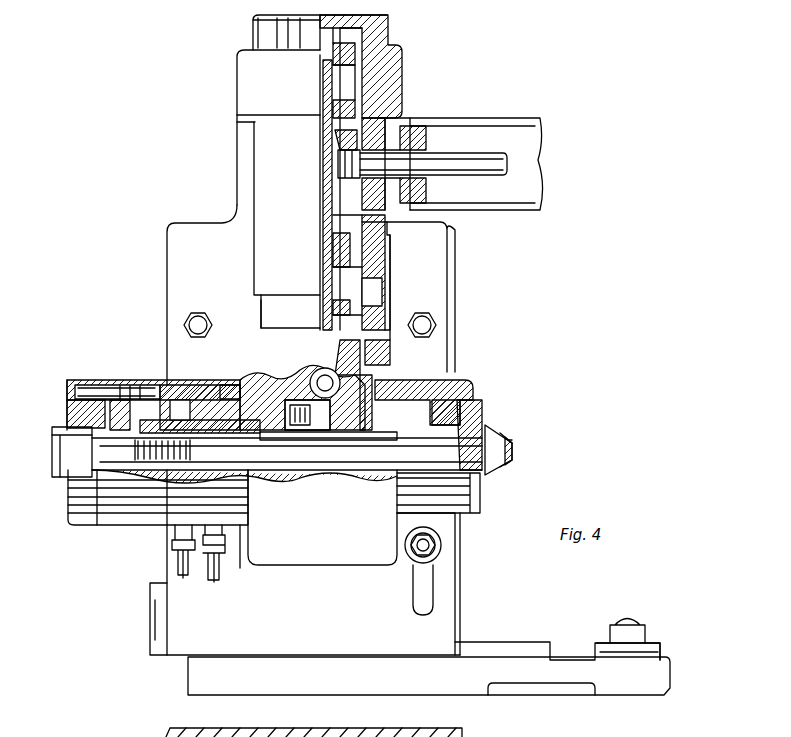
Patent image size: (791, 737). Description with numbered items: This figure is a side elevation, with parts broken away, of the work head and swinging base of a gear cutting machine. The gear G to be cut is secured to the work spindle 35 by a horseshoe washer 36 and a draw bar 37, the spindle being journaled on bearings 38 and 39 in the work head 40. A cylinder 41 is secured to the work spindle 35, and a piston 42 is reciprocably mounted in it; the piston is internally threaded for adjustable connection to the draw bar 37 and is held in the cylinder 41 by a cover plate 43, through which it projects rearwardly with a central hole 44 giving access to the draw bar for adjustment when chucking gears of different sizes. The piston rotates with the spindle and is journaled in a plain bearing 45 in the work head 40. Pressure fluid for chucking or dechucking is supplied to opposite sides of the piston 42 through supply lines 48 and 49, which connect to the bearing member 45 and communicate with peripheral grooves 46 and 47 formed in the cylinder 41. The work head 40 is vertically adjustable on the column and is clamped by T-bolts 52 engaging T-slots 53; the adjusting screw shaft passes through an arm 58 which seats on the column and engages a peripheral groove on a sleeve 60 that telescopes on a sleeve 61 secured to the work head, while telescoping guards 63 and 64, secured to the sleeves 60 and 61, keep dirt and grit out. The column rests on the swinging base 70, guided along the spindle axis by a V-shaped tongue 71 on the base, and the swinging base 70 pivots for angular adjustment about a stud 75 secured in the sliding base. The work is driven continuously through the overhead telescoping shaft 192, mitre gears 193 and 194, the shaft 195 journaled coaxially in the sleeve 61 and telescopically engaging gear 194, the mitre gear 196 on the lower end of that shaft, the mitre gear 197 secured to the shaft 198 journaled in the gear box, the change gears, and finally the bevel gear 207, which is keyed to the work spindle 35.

The work spindle 35 is at (340, 470).
The horseshoe washer 36 is at (514, 453).
The draw bar 37 is at (350, 470).
The bearing 38 is at (445, 386).
The bearing 39 is at (303, 372).
The work head 40 is at (452, 342).
The cylinder 41 is at (197, 386).
The piston 42 is at (128, 400).
The cover plate 43 is at (68, 408).
The central hole 44 is at (62, 450).
The plain bearing 45 is at (160, 385).
The peripheral groove 46 is at (228, 384).
The peripheral groove 47 is at (213, 386).
The supply line 48 is at (218, 578).
The supply line 49 is at (182, 576).
The T-bolt 52 is at (441, 547).
The T-slot 53 is at (435, 588).
The arm 58 is at (396, 92).
The sleeve 60 is at (368, 252).
The sleeve 61 is at (383, 289).
The telescoping guard 63 is at (268, 255).
The telescoping guard 64 is at (268, 316).
The swinging base 70 is at (466, 695).
The V-shaped tongue 71 is at (503, 648).
The stud 75 is at (637, 624).
The gear G is at (506, 432).
The overhead telescoping shaft 192 is at (466, 170).
The mitre gear 193 is at (337, 232).
The mitre gear 194 is at (340, 133).
The shaft 195 is at (322, 216).
The mitre gear 196 is at (380, 354).
The mitre gear 197 is at (316, 397).
The shaft 198 is at (335, 395).
The bevel gear 207 is at (388, 375).